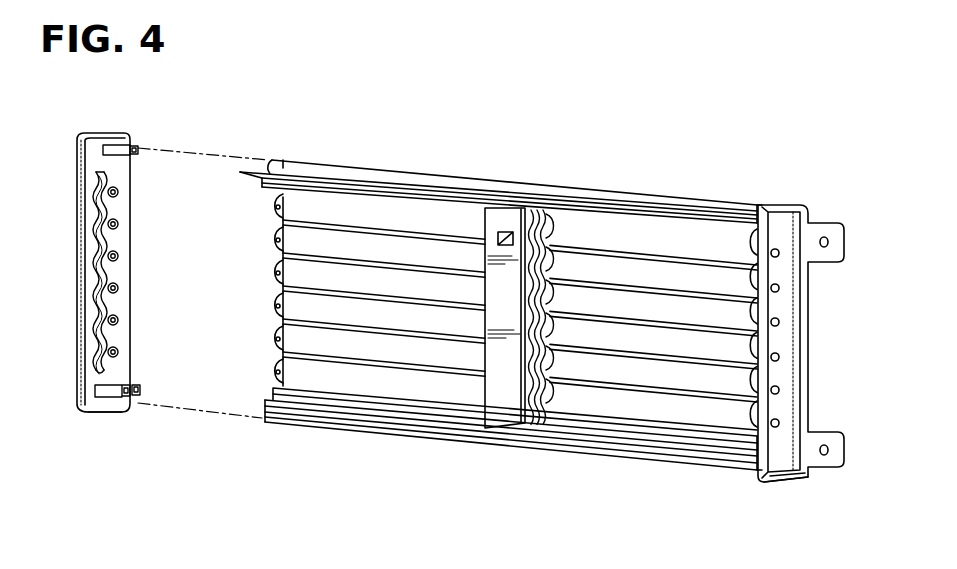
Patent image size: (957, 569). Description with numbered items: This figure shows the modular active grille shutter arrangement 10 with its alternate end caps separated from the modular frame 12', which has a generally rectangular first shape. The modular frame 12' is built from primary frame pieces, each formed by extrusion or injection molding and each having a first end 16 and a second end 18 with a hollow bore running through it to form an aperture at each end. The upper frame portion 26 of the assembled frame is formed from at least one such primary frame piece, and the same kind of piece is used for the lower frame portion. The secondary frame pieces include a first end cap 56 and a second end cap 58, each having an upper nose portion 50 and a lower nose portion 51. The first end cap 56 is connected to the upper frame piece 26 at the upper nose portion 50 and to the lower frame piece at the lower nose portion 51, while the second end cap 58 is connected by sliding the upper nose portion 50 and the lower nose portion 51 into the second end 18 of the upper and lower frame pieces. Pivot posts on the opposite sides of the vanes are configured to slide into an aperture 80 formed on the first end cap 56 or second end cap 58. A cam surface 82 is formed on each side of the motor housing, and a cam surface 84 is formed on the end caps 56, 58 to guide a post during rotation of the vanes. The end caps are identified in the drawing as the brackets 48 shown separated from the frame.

The modular active grille shutter arrangement 10 is at (352, 80).
The modular frame 12' is at (526, 274).
The first end 16 is at (281, 162).
The second end 18 is at (760, 208).
The upper frame portion 26 is at (592, 192).
The mounting bracket 48 is at (108, 410).
The upper nose portion 50 is at (121, 150).
The lower nose portion 51 is at (110, 388).
The first end cap 56 is at (78, 300).
The second end cap 58 is at (806, 335).
The aperture 80 is at (120, 256).
The cam surface 82 is at (533, 215).
The cam surface 84 is at (96, 352).